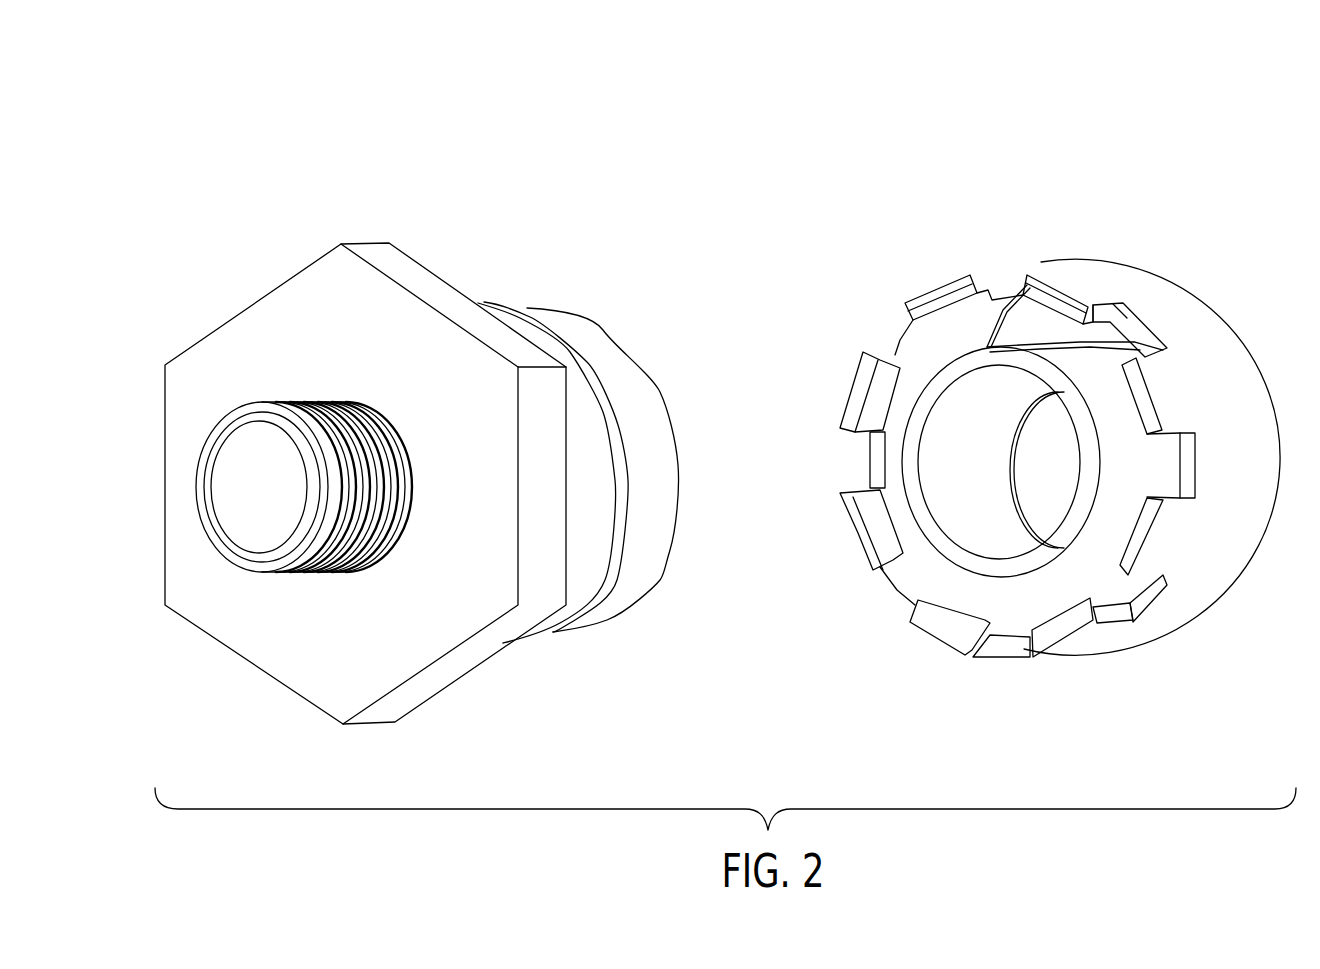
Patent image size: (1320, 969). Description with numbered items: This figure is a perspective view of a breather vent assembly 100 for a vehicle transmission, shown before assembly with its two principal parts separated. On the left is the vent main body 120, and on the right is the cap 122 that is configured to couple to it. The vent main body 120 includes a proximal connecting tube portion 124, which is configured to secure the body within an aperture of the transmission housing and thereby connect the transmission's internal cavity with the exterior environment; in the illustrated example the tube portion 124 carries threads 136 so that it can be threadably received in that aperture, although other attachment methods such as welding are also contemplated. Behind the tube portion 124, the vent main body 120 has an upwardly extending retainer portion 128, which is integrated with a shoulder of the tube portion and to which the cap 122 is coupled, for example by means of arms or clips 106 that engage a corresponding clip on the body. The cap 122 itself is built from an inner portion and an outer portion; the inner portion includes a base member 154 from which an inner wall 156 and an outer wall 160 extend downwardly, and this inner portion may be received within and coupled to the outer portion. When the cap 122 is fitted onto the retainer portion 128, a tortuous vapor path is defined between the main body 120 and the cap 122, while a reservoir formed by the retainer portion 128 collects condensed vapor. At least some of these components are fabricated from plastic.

The breather vent assembly 100 is at (460, 125).
The vent main body 120 is at (329, 205).
The cap 122 is at (1066, 182).
The connecting tube portion 124 is at (332, 577).
The retainer portion 128 is at (577, 525).
The threads 136 is at (297, 400).
The arms or clips 106 is at (852, 528).
The base member 154 is at (1052, 460).
The inner wall 156 is at (1092, 535).
The outer wall 160 is at (1237, 550).